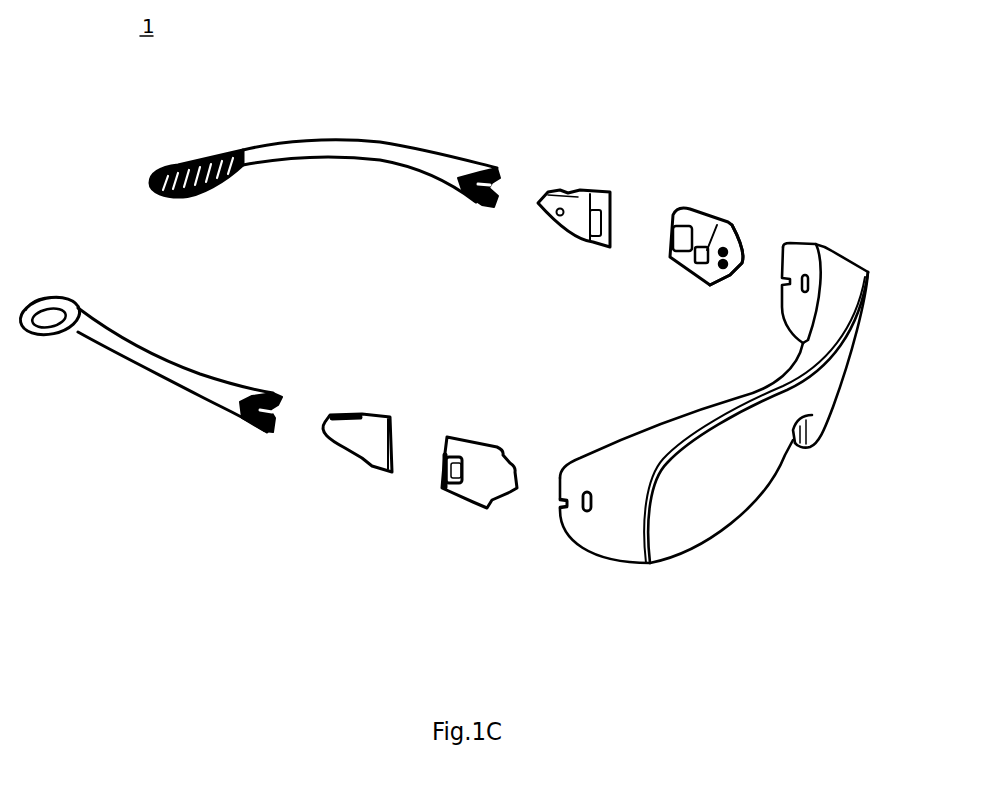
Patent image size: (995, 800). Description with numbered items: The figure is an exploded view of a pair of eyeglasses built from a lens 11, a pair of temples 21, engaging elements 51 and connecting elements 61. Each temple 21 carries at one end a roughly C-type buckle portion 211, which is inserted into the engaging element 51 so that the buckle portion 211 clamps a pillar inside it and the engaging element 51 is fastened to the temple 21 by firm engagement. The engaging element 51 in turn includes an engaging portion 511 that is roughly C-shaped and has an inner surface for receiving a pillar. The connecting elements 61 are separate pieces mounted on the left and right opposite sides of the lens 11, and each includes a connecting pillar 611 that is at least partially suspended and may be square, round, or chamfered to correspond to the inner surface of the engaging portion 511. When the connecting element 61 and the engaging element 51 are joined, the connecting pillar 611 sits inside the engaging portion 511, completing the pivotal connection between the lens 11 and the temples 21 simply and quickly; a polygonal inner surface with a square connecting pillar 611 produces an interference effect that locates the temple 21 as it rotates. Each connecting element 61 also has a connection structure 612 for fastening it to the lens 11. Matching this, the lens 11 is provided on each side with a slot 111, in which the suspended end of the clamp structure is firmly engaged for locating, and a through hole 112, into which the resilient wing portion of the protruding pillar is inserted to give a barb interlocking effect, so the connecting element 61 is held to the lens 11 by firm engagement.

The lens 11 is at (685, 450).
The slot 111 is at (560, 512).
The through hole 112 is at (592, 513).
The temple 21 is at (149, 477).
The buckle portion 211 is at (268, 430).
The engaging element 51 is at (347, 440).
The engaging portion 511 is at (603, 192).
The connecting element 61 is at (470, 478).
The connecting pillar 611 is at (773, 179).
The connection structure 612 is at (730, 223).